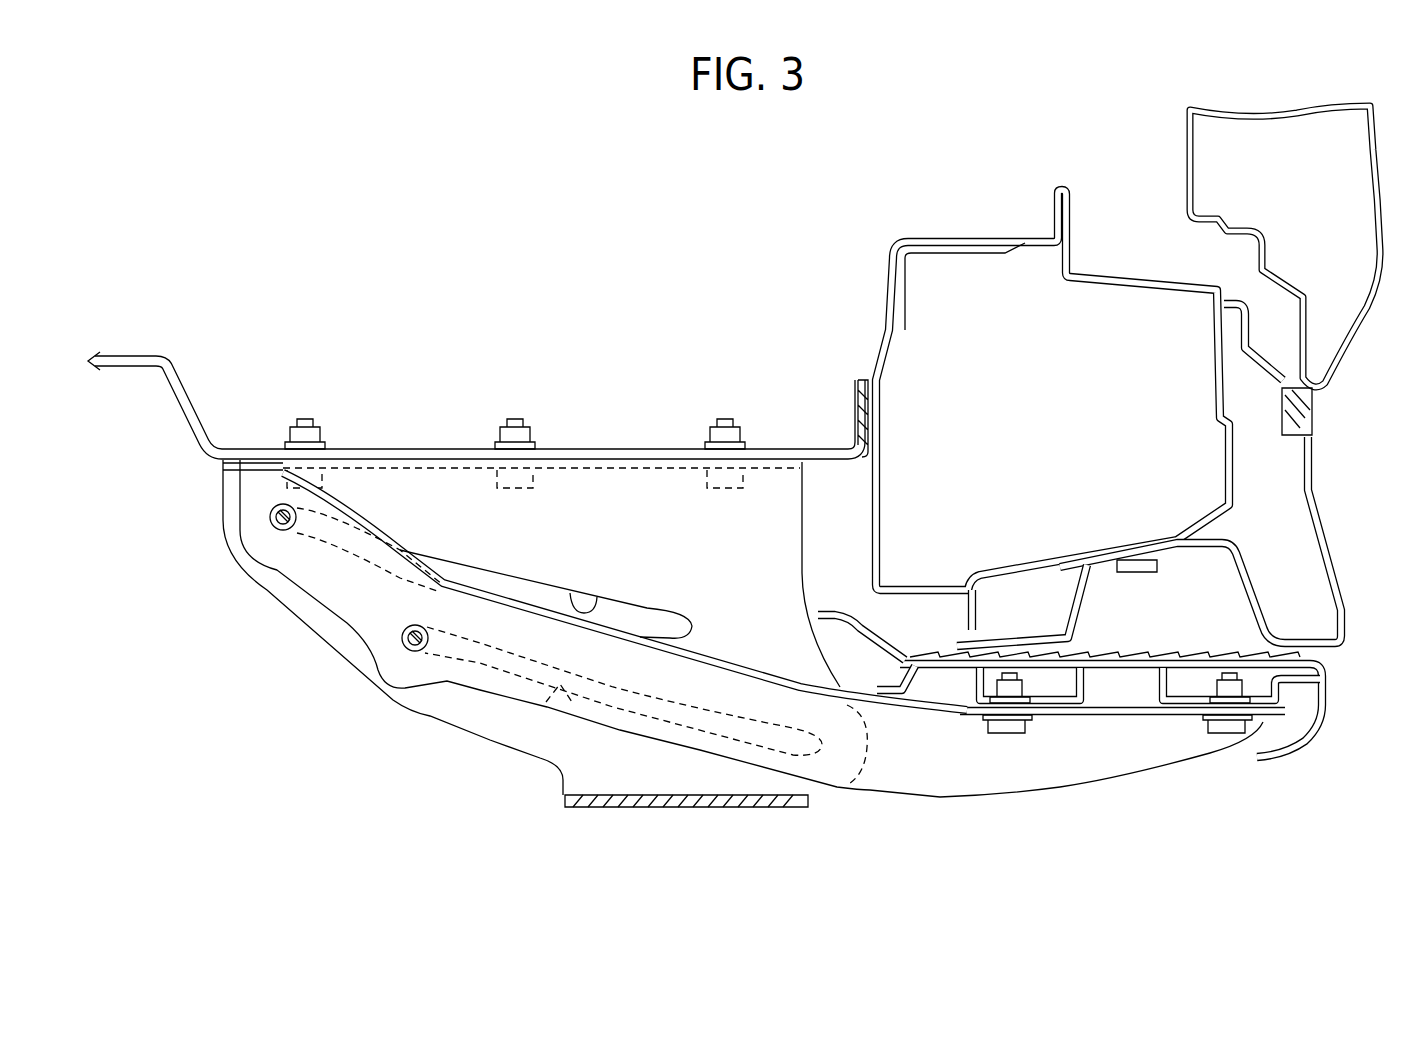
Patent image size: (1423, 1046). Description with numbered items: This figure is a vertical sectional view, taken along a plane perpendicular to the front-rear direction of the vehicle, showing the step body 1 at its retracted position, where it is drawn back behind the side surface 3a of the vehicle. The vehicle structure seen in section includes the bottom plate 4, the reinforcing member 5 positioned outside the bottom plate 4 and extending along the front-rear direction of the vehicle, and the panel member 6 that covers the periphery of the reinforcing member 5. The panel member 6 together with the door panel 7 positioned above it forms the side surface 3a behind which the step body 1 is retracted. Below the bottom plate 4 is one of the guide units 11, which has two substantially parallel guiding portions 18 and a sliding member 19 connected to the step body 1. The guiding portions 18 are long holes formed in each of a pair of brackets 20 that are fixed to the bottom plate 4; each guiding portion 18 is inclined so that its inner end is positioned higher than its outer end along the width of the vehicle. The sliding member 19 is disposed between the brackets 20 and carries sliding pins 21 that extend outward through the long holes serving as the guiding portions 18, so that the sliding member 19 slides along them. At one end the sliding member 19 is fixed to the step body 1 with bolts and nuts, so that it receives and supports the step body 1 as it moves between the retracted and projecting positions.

The step body 1 is at (1118, 656).
The bottom plate 4 is at (597, 445).
The reinforcing member 5 is at (1113, 278).
The panel member 6 is at (1315, 480).
The door panel 7 is at (1373, 145).
The side surface 3a is at (1241, 353).
The guide unit 11 is at (475, 716).
The guiding portion 18 is at (597, 600).
The sliding member 19 is at (918, 785).
The bracket 20 is at (803, 578).
The sliding pin 21 is at (282, 531).